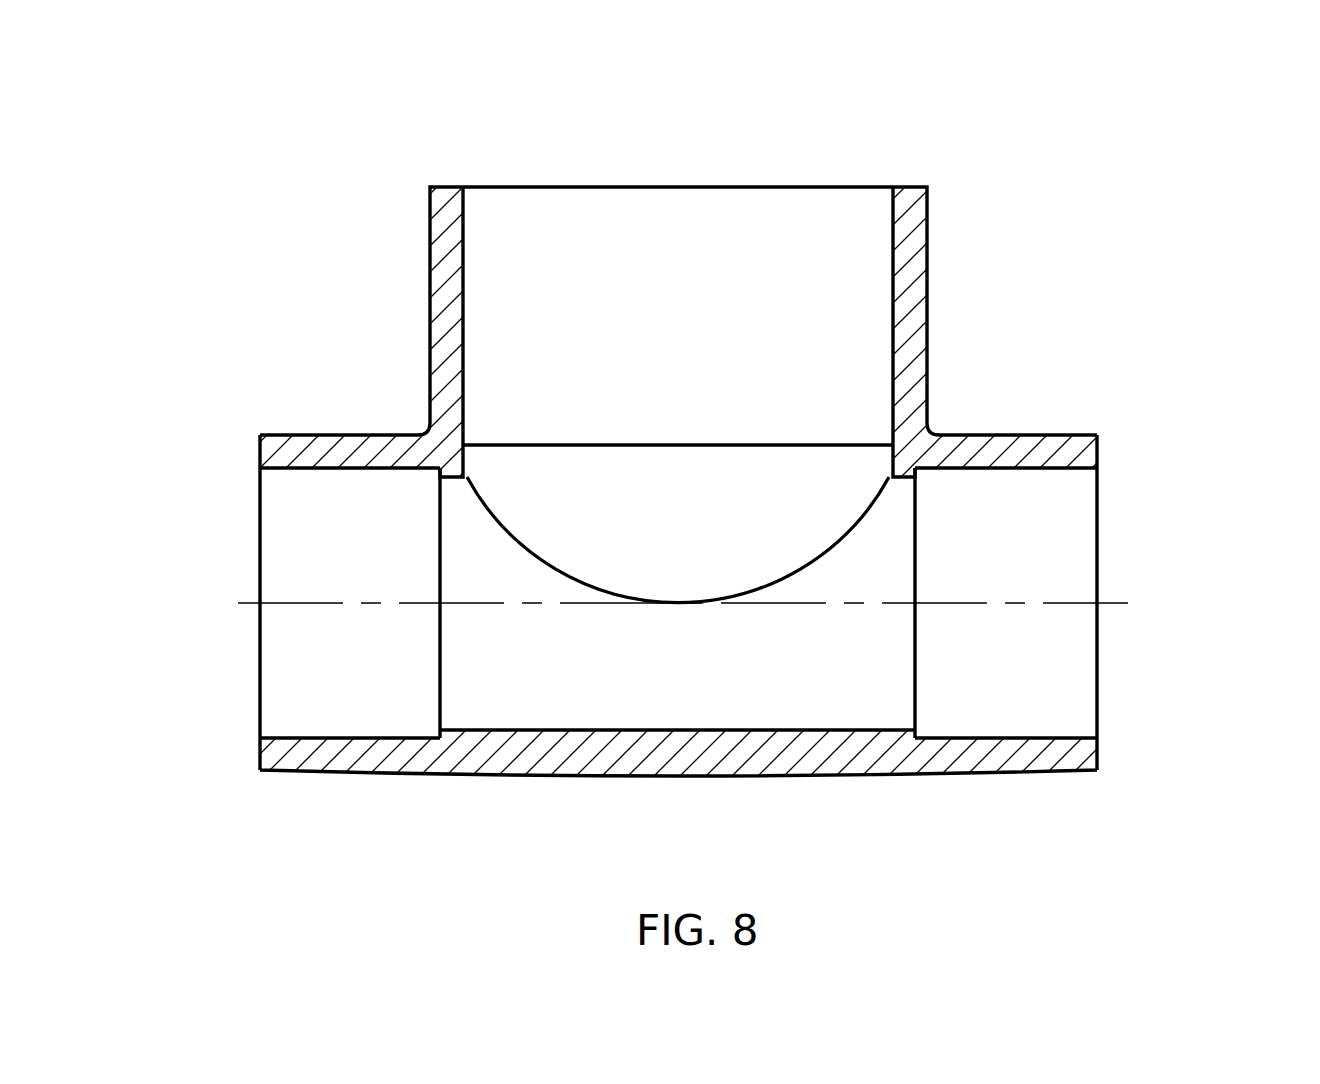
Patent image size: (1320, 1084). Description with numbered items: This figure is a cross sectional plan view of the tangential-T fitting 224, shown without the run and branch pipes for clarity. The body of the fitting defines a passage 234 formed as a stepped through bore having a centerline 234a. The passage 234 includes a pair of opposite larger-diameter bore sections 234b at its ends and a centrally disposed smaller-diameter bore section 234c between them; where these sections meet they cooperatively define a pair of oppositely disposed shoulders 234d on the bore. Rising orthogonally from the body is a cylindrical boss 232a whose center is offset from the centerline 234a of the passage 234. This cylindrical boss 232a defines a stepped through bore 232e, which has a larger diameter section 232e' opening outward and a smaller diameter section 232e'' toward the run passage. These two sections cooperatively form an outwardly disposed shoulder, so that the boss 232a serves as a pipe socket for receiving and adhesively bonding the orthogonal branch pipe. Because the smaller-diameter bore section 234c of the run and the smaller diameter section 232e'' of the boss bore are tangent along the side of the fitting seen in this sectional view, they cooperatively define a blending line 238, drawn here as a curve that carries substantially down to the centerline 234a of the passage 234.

The tangential-T fitting 224 is at (375, 371).
The cylindrical boss 232a is at (927, 293).
The stepped through bore 232e is at (537, 316).
The larger diameter section 232e' is at (831, 262).
The smaller diameter section 232e'' is at (677, 425).
The passage 234 is at (293, 738).
The centerline 234a is at (1107, 600).
The larger-diameter bore sections 234b is at (307, 467).
The smaller-diameter bore section 234c is at (683, 730).
The shoulders 234d is at (437, 730).
The blending line 238 is at (540, 548).